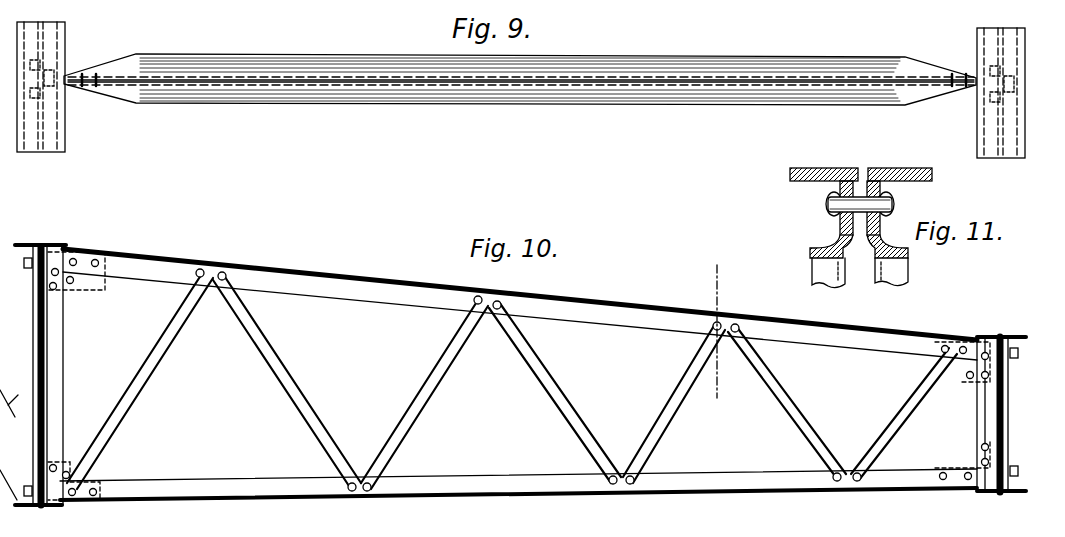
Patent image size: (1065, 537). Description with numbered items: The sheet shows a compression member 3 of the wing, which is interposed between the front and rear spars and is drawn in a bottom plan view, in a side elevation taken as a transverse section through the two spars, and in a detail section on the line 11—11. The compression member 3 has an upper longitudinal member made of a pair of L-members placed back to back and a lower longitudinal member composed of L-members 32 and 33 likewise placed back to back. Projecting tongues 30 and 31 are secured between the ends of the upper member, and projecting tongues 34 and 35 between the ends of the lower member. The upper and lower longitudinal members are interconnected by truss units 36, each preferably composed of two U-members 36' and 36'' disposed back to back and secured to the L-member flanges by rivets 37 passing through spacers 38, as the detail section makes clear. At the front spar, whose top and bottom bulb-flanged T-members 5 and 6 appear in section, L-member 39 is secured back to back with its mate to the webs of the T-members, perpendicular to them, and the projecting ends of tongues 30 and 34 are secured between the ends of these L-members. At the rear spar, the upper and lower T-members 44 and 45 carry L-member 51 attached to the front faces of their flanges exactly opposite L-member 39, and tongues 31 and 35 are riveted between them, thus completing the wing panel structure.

In FIG. 10, the compression member 3 is at (630, 306).
In FIG. 10, the top bulb-flanged T-member 5 is at (46, 244).
In FIG. 9, the bottom bulb-flanged T-member 6 is at (66, 126).
In FIG. 10, the bottom bulb-flanged T-member 6 is at (45, 506).
In FIG. 10, the section line 11 is at (734, 416).
In FIG. 10, the projecting tongue 30 is at (76, 278).
In FIG. 10, the projecting tongue 31 is at (1000, 371).
In FIG. 9, the L-member 32 is at (626, 66).
In FIG. 10, the L-member 32 is at (545, 483).
In FIG. 9, the L-member 33 is at (682, 92).
In FIG. 10, the projecting tongue 34 is at (66, 468).
In FIG. 10, the projecting tongue 35 is at (943, 466).
In FIG. 10, the truss unit 36 is at (512, 380).
In FIG. 11, the U-member 36' is at (812, 261).
In FIG. 11, the U-member 36'' is at (914, 260).
In FIG. 11, the rivet 37 is at (893, 203).
In FIG. 11, the spacer 38 is at (863, 173).
In FIG. 10, the L-member 39 is at (55, 338).
In FIG. 10, the upper T-member 44 is at (984, 336).
In FIG. 9, the lower T-member 45 is at (1022, 106).
In FIG. 10, the lower T-member 45 is at (996, 493).
In FIG. 10, the L-member 51 is at (985, 409).